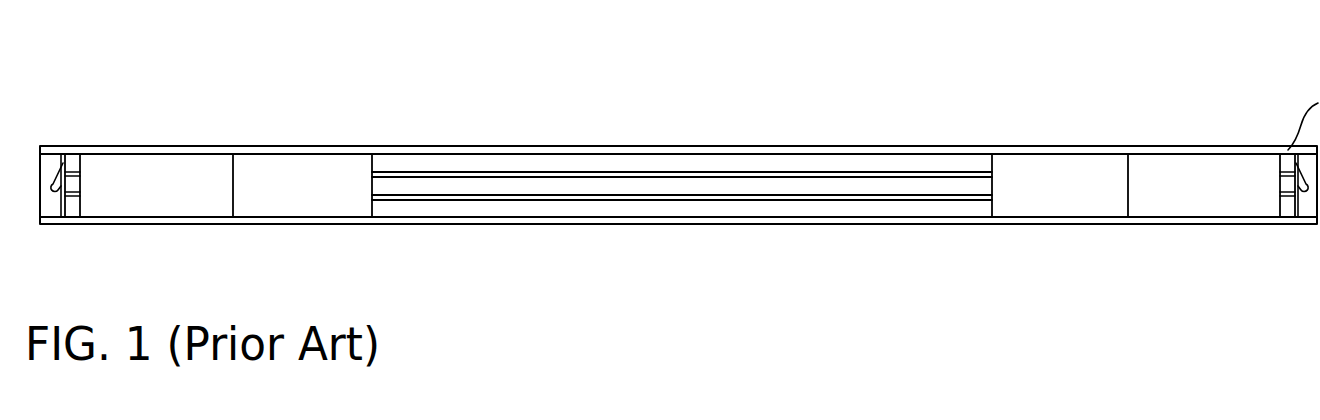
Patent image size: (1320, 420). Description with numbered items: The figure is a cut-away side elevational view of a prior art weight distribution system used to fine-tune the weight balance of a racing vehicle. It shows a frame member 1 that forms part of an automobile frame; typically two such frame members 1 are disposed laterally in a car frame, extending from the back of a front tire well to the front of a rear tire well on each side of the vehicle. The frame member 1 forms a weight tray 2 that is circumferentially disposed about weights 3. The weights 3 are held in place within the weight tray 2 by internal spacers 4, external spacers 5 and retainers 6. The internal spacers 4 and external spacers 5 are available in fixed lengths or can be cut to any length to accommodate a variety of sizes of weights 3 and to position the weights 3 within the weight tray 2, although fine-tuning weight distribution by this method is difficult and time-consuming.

The frame member 1 is at (868, 142).
The weight tray 2 is at (453, 146).
The weight 3 is at (162, 172).
The internal spacer 4 is at (585, 172).
The external spacer 5 is at (72, 170).
The retainer 6 is at (60, 210).